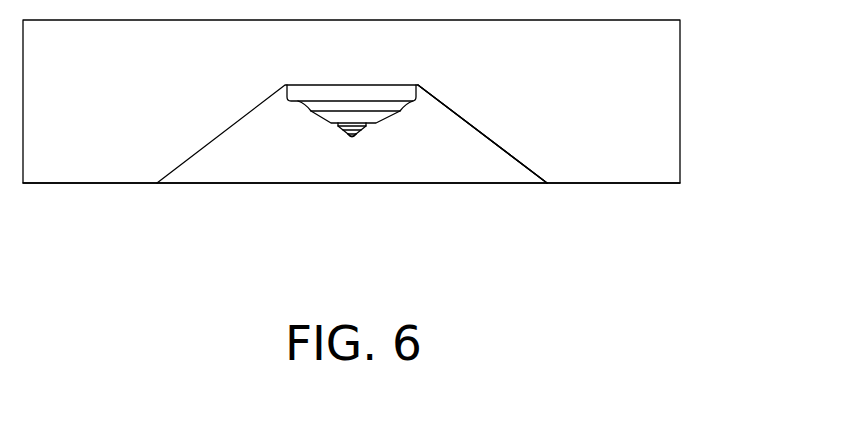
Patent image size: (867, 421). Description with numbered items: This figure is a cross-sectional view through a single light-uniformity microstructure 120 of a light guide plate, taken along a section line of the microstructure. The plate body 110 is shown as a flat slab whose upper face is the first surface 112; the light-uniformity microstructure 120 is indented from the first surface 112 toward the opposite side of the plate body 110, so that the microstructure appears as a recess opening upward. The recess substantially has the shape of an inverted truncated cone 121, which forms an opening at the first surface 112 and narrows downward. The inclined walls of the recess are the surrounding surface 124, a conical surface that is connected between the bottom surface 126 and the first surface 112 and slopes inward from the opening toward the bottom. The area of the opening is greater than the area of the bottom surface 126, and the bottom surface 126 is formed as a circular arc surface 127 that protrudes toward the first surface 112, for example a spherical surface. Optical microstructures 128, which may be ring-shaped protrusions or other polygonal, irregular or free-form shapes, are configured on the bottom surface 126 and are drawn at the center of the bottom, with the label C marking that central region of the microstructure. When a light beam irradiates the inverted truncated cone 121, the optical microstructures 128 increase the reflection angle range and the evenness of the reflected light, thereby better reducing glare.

The plate body 110 is at (663, 101).
The first surface 112 is at (615, 183).
The light-uniformity microstructure 120 is at (512, 83).
The inverted truncated cone 121 is at (510, 152).
The surrounding surface 124 is at (483, 136).
The bottom surface 126 is at (308, 104).
The circular arc surface 127 is at (290, 97).
The optical microstructure 128 is at (405, 109).
The center point C is at (353, 138).